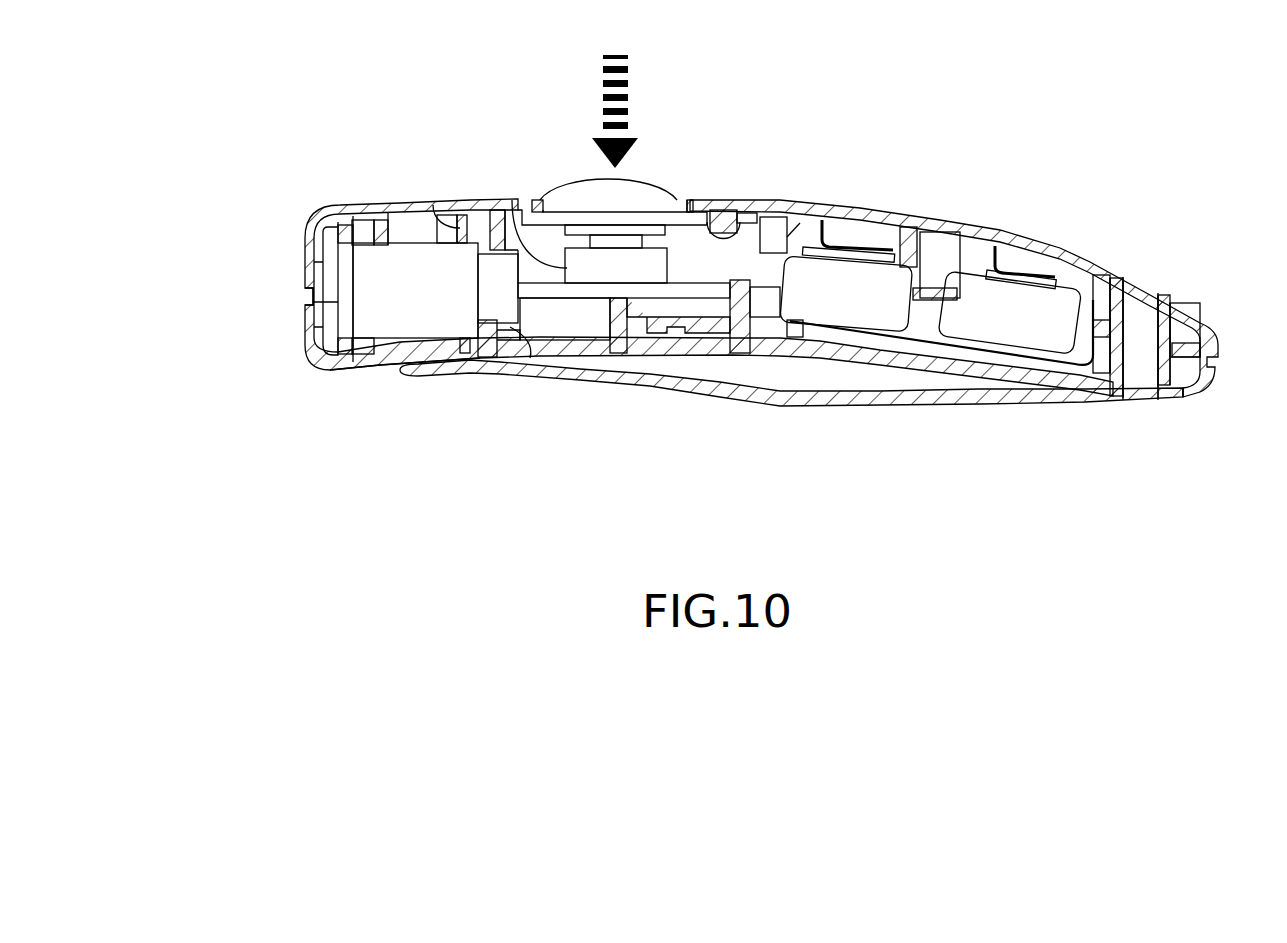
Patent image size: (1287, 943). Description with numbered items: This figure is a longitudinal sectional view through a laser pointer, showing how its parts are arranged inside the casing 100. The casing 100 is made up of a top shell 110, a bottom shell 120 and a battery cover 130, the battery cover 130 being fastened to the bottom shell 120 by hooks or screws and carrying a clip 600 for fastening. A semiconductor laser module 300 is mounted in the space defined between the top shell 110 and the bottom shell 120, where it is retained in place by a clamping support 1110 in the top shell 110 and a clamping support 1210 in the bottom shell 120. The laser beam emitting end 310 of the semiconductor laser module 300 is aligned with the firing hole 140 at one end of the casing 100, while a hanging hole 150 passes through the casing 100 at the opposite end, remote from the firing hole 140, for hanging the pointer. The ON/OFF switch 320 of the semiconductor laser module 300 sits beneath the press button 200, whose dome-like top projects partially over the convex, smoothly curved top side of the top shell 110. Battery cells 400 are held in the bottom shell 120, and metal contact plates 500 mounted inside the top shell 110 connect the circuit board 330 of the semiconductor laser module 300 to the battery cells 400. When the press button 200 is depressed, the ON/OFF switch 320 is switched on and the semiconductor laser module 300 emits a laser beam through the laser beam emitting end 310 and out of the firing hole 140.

The casing 100 is at (955, 203).
The top shell 110 is at (1210, 327).
The bottom shell 120 is at (345, 370).
The battery cover 130 is at (1183, 398).
The firing hole 140 is at (313, 306).
The hanging hole 150 is at (1147, 295).
The press button 200 is at (653, 195).
The semiconductor laser module 300 is at (400, 205).
The laser beam emitting end 310 is at (343, 276).
The ON/OFF switch 320 is at (516, 200).
The circuit board 330 is at (696, 287).
The battery cell 400 is at (890, 273).
The metal contact plate 500 is at (847, 250).
The clip 600 is at (813, 400).
The clamping support 1110 is at (404, 232).
The clamping support 1210 is at (528, 355).